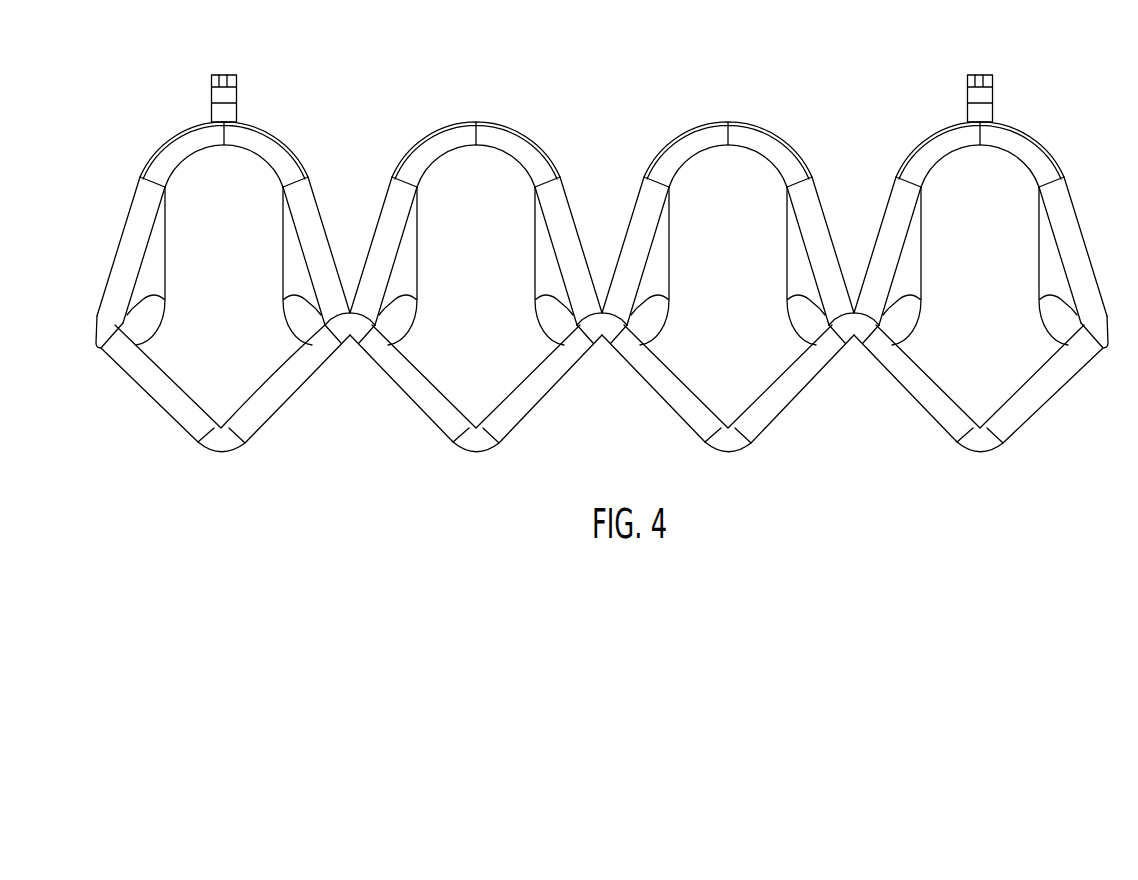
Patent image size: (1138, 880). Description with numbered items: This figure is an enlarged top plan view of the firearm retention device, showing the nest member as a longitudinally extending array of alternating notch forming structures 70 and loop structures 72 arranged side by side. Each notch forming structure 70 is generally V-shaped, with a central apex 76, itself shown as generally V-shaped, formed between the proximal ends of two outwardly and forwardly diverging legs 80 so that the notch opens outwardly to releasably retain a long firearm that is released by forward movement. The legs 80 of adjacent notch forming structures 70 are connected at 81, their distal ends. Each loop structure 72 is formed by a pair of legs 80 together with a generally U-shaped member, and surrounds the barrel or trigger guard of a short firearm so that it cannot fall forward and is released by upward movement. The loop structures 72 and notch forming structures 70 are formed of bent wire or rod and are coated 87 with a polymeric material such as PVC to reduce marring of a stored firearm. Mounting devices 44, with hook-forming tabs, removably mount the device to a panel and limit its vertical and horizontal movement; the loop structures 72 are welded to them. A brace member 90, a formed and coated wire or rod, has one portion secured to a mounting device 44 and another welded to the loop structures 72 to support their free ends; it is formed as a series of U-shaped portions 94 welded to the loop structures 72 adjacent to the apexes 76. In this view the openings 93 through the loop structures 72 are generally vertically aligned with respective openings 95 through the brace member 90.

The mounting device 44 is at (236, 99).
The notch forming structure 70 is at (280, 410).
The loop structure 72 is at (579, 228).
The central apex 76 is at (351, 338).
The legs 80 is at (680, 422).
The connection of legs 81 is at (735, 453).
The coating 87 is at (452, 130).
The brace member 90 is at (1042, 273).
The opening 93 is at (718, 213).
The U-shaped portion 94 is at (300, 337).
The opening 95 is at (758, 225).